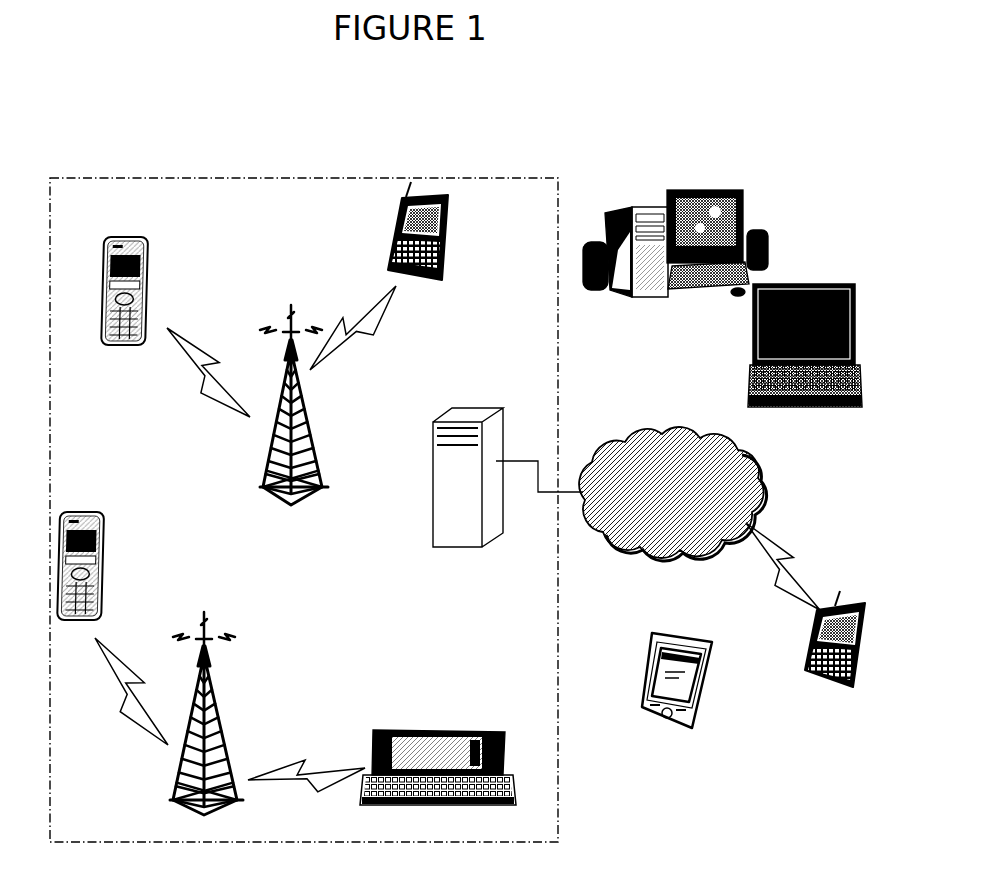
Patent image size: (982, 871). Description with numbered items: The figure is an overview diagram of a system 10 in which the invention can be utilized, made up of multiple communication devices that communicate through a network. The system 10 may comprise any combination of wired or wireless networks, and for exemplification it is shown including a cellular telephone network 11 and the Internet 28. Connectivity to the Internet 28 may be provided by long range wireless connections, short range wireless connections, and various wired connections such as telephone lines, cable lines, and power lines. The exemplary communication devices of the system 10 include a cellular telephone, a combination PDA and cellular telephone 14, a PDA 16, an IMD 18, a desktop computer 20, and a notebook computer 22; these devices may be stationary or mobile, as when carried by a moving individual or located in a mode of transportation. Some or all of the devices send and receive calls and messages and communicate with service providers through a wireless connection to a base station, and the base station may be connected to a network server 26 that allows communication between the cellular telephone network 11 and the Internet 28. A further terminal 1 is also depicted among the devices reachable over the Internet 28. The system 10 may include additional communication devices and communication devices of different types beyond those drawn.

The mobile terminal 1 is at (837, 680).
The system 10 is at (879, 820).
The cellular telephone network 11 is at (94, 210).
The combination PDA and cellular telephone 14 is at (438, 728).
The PDA 16 is at (712, 693).
The IMD 18 is at (457, 243).
The desktop computer 20 is at (633, 201).
The notebook computer 22 is at (841, 418).
The network server 26 is at (456, 551).
The Internet 28 is at (670, 495).